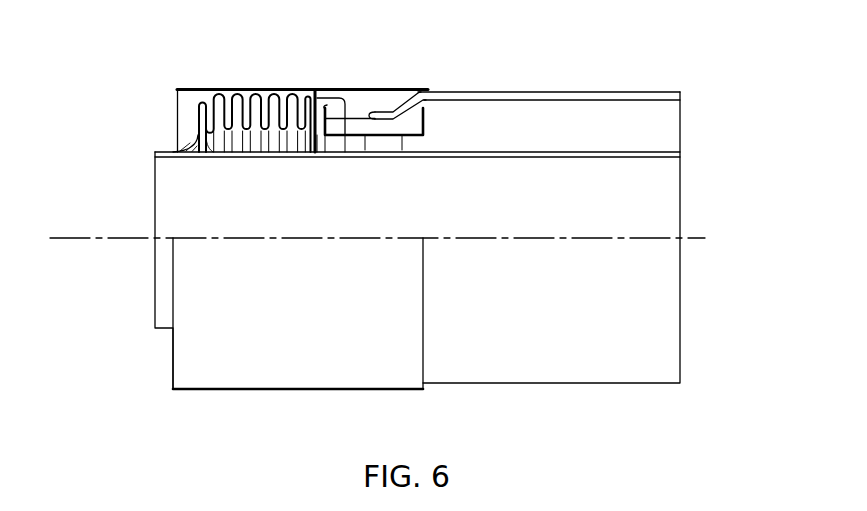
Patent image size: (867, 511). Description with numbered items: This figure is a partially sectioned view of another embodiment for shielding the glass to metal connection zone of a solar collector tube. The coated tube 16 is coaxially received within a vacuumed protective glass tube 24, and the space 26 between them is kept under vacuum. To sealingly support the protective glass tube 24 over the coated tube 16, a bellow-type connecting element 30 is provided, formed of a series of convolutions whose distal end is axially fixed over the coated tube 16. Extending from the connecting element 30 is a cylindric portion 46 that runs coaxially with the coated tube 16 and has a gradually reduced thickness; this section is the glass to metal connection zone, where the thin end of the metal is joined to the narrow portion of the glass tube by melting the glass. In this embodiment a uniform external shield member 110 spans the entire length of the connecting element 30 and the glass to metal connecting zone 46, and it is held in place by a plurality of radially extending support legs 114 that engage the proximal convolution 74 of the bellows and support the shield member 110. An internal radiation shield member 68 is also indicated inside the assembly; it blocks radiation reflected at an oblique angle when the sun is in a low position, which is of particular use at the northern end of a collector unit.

The coated tube 16 is at (640, 151).
The protective glass tube 24 is at (508, 96).
The space 26 is at (633, 118).
The connecting element 30 is at (208, 101).
The cylindric portion 46 is at (353, 107).
The internal radiation shield member 68 is at (437, 115).
The proximal convolution 74 is at (316, 155).
The external shield member 110 is at (283, 88).
The support legs 114 is at (345, 119).